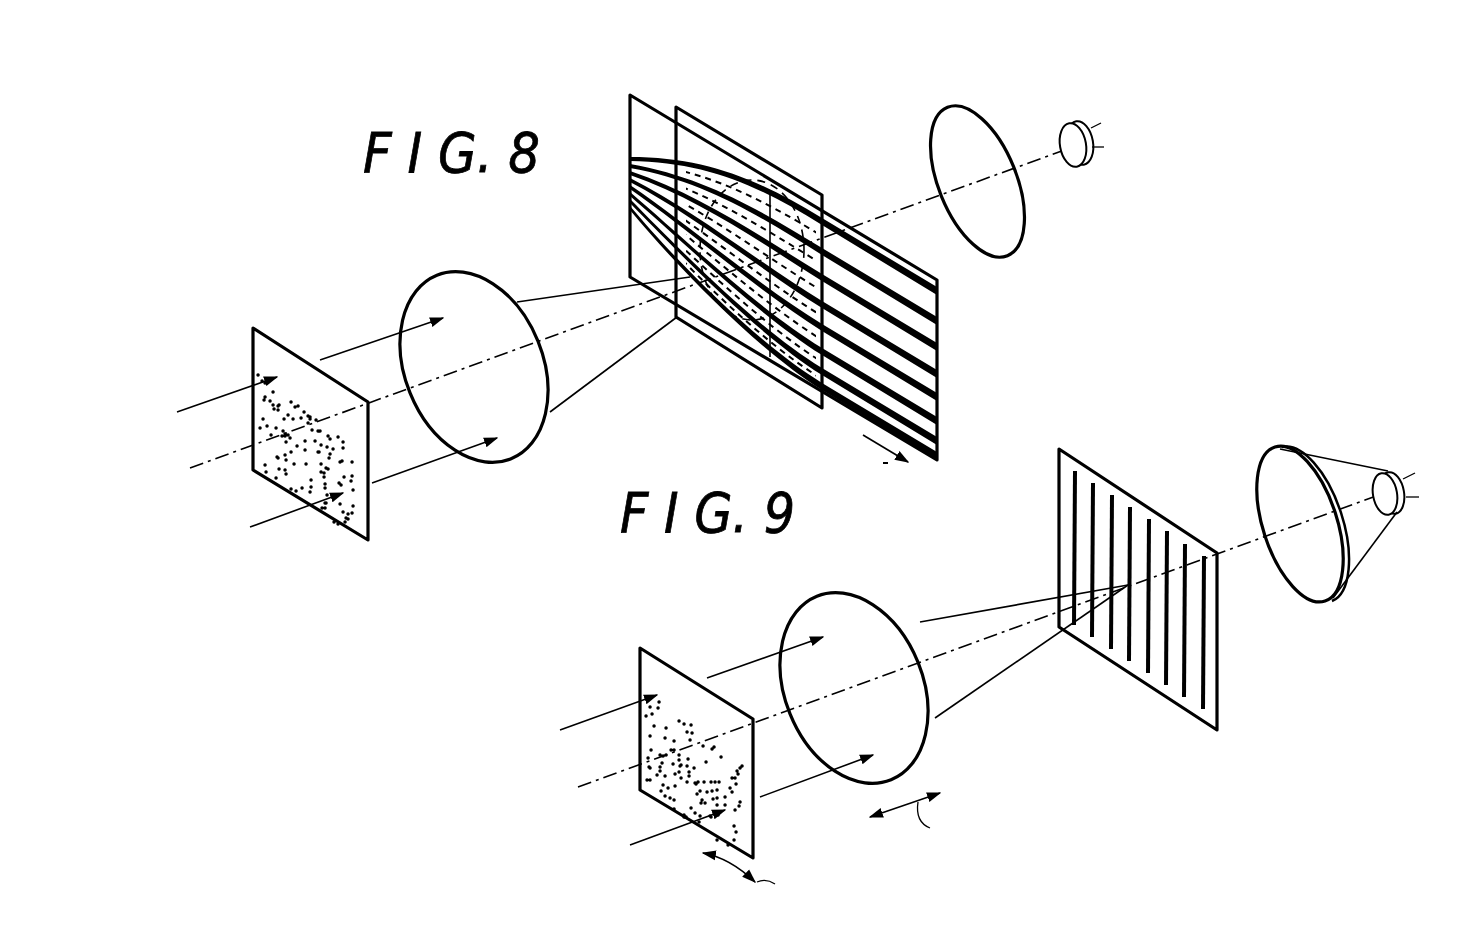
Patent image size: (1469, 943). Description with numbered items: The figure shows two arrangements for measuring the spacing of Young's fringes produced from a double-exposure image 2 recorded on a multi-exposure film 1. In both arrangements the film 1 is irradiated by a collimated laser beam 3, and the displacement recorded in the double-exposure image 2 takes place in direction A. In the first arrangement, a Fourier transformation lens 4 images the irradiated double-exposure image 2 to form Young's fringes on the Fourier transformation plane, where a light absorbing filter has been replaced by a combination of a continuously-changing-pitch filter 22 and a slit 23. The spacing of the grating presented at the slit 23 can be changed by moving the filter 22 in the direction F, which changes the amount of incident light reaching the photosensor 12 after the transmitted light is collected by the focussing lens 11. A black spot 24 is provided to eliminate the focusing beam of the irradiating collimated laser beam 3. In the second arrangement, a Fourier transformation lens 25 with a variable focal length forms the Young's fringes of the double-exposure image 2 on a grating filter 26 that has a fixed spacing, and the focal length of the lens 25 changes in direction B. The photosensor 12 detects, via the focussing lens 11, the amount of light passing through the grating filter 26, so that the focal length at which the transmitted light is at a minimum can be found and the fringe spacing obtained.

In FIG. 8, the multi-exposure film 1 is at (270, 338).
In FIG. 9, the multi-exposure film 1 is at (655, 648).
In FIG. 8, the double-exposure image 2 is at (350, 475).
In FIG. 9, the double-exposure image 2 is at (683, 787).
In FIG. 8, the collimated laser beam 3 is at (202, 466).
In FIG. 9, the collimated laser beam 3 is at (592, 784).
In FIG. 8, the Fourier transformation lens 4 is at (523, 452).
In FIG. 8, the focussing lens 11 is at (952, 106).
In FIG. 9, the focussing lens 11 is at (1330, 606).
In FIG. 8, the photosensor 12 is at (1077, 168).
In FIG. 9, the photosensor 12 is at (1387, 472).
In FIG. 8, the continuously-changing-pitch filter 22 is at (940, 370).
In FIG. 8, the slit 23 is at (740, 162).
In FIG. 8, the black spot 24 is at (782, 223).
In FIG. 9, the Fourier transformation lens with variable focal length 25 is at (837, 593).
In FIG. 9, the grating filter 26 is at (1100, 476).